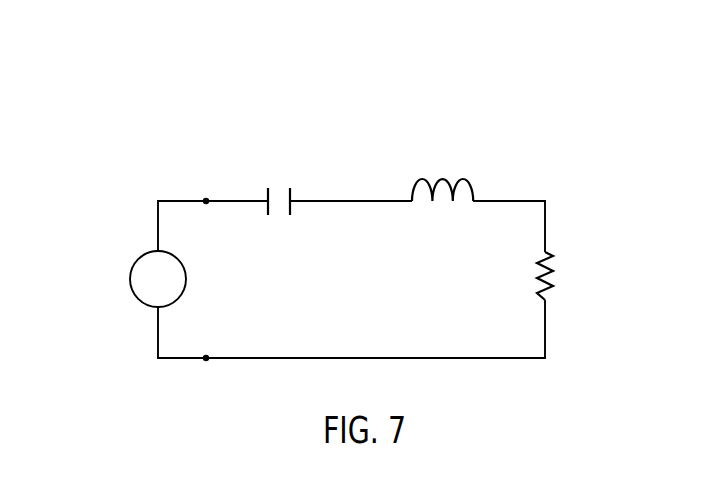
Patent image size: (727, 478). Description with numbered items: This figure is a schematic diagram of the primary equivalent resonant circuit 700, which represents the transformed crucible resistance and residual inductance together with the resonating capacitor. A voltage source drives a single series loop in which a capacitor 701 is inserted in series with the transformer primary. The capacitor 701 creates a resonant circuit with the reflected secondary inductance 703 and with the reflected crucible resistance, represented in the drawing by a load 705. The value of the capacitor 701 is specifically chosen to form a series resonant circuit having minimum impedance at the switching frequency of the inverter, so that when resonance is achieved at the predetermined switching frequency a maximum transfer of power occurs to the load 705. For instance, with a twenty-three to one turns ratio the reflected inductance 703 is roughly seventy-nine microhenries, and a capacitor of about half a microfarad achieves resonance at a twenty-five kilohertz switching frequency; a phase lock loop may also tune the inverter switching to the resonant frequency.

The resonant circuit model 700 is at (123, 163).
The capacitor 701 is at (257, 192).
The reflected secondary inductance 703 is at (404, 193).
The load 705 is at (552, 296).